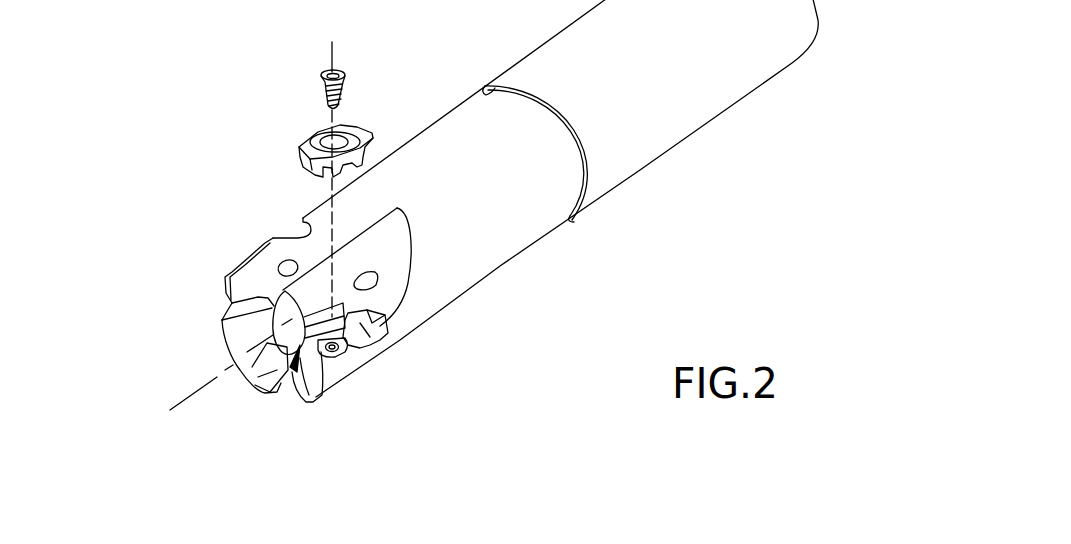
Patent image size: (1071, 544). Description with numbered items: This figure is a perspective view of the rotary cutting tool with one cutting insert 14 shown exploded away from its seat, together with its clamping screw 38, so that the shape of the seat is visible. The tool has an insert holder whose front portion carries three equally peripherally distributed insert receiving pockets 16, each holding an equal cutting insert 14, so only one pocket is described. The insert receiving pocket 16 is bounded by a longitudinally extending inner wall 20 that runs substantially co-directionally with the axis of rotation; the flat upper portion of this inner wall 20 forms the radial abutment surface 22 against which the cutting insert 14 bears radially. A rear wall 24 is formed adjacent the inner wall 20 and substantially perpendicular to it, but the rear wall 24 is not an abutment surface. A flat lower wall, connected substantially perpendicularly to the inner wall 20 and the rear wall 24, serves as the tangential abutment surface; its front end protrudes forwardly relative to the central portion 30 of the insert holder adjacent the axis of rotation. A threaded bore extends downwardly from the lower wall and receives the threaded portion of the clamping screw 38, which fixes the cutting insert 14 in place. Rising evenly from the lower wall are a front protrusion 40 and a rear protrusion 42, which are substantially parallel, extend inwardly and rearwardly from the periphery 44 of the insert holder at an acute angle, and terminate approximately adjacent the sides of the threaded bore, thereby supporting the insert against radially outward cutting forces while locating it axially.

The cutting insert 14 is at (305, 147).
The insert receiving pocket 16 is at (324, 311).
The inner wall 20 is at (293, 373).
The radial abutment surface 22 is at (330, 315).
The rear wall 24 is at (347, 323).
The central portion 30 is at (223, 330).
The clamping screw 38 is at (343, 72).
The front protrusion 40 is at (313, 403).
The rear protrusion 42 is at (343, 340).
The periphery 44 is at (339, 347).